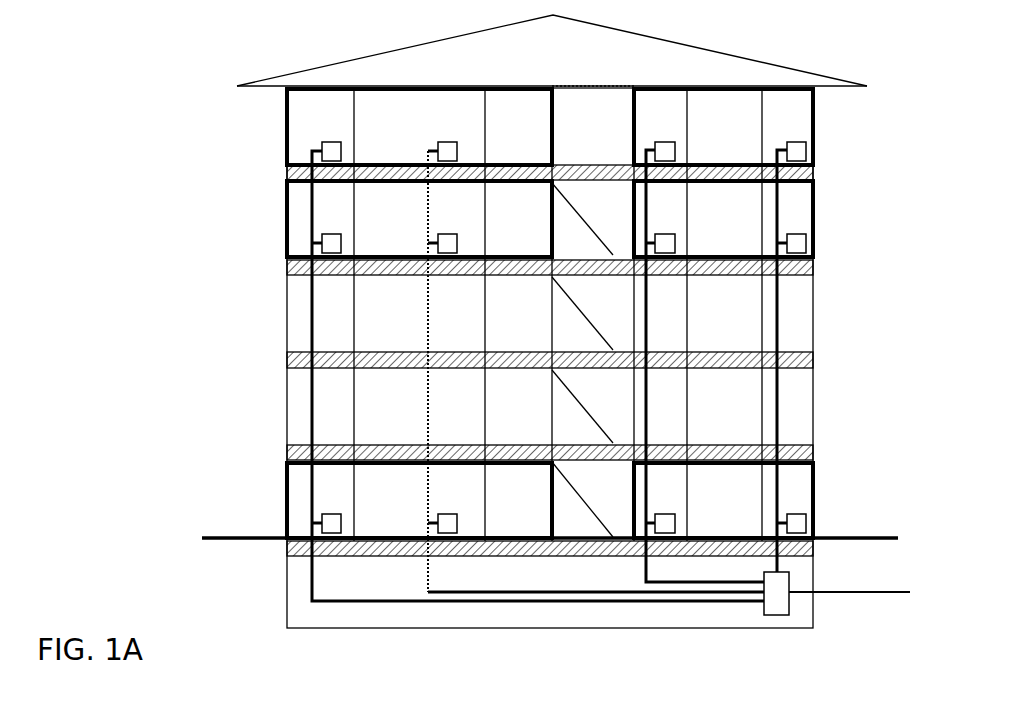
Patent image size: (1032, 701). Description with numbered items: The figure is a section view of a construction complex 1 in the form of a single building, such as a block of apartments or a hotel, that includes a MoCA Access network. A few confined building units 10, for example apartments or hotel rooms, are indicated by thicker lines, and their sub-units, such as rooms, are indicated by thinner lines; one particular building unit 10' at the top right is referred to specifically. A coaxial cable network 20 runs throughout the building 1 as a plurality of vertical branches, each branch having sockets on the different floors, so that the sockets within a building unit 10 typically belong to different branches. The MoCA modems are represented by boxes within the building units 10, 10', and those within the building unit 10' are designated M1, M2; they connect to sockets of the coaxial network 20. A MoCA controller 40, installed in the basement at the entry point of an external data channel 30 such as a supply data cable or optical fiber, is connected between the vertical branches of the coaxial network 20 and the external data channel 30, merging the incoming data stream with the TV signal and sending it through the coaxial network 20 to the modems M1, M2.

The construction complex 1 is at (205, 68).
The building unit 10 is at (548, 313).
The building unit 10' is at (773, 127).
The MoCA modem M1 is at (665, 151).
The MoCA modem M2 is at (797, 152).
The coaxial cable network 20 is at (312, 390).
The external data channel 30 is at (866, 594).
The network management device 40 is at (776, 600).